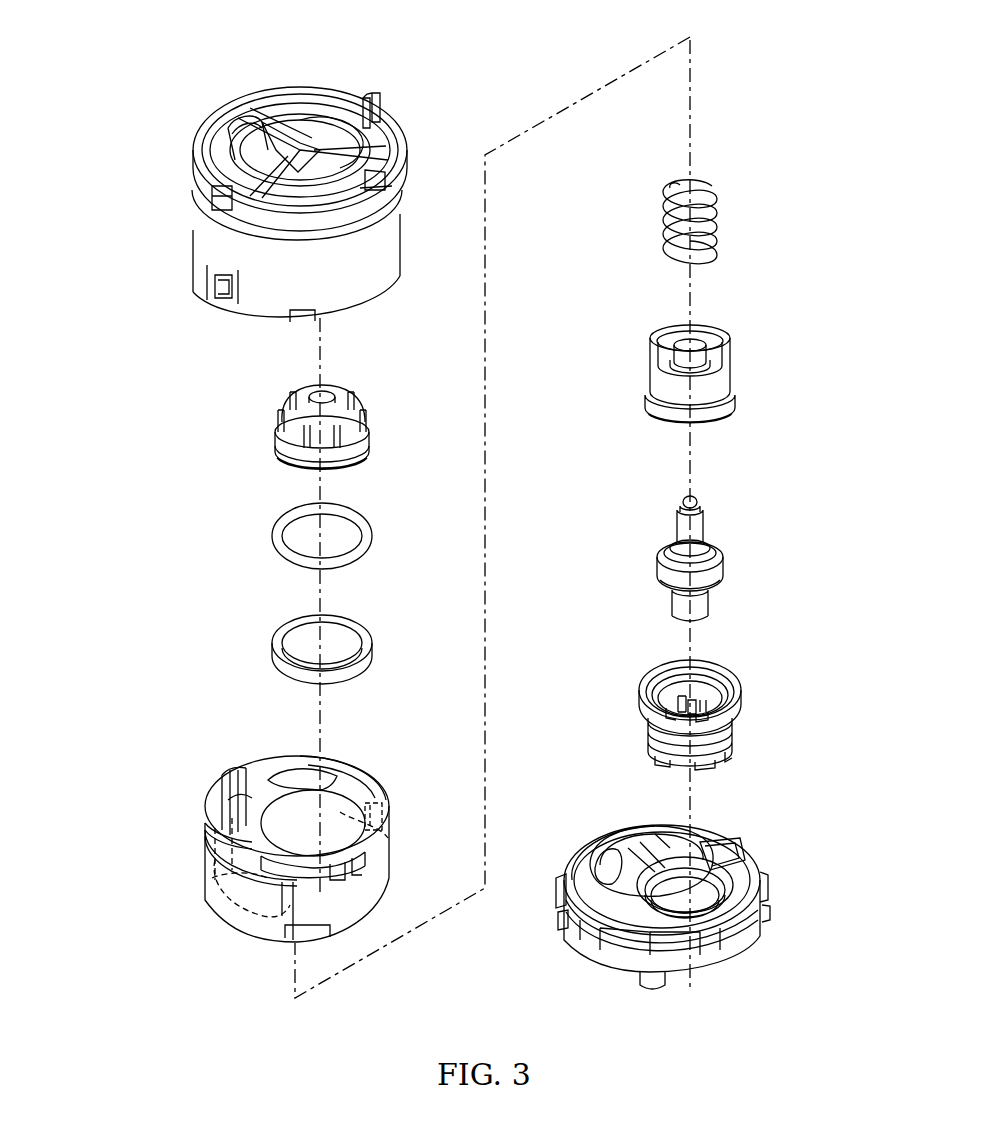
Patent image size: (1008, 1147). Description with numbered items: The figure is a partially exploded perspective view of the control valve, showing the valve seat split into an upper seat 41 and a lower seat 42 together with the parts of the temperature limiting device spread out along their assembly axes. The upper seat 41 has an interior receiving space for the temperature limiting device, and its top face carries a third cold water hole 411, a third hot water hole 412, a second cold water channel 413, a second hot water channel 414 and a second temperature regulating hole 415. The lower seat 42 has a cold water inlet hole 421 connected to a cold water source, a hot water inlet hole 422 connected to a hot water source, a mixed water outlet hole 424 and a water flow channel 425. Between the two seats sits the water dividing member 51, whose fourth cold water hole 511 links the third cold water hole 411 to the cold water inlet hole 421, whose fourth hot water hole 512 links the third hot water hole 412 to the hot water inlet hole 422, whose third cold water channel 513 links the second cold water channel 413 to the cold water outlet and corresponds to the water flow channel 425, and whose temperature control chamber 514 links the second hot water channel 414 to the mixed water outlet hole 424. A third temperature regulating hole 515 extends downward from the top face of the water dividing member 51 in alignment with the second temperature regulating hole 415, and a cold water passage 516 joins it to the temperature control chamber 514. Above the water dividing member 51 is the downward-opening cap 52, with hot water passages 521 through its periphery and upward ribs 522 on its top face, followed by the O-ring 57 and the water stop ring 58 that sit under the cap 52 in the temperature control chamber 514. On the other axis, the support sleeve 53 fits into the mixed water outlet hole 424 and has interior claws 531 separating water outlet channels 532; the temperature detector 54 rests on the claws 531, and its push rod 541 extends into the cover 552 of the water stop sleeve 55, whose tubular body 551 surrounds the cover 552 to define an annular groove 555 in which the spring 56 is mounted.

The upper seat 41 is at (276, 177).
The third cold water hole 411 is at (215, 195).
The third hot water hole 412 is at (371, 110).
The second cold water channel 413 is at (228, 130).
The second hot water channel 414 is at (370, 175).
The second temperature regulating hole 415 is at (270, 93).
The lower seat 42 is at (654, 886).
The cold water inlet hole 421 is at (580, 913).
The hot water inlet hole 422 is at (653, 845).
The mixed water outlet hole 424 is at (722, 888).
The water flow channel 425 is at (590, 850).
The water dividing member 51 is at (270, 831).
The fourth cold water hole 511 is at (226, 788).
The fourth hot water hole 512 is at (296, 780).
The third cold water channel 513 is at (203, 818).
The temperature control chamber 514 is at (318, 826).
The third temperature regulating hole 515 is at (355, 780).
The cold water passage 516 is at (360, 848).
The cap 52 is at (311, 404).
The hot water passages 521 is at (275, 438).
The ribs 522 is at (355, 448).
The support sleeve 53 is at (695, 701).
The claws 531 is at (650, 697).
The water outlet channels 532 is at (693, 697).
The temperature detector 54 is at (715, 528).
The push rod 541 is at (683, 499).
The water stop sleeve 55 is at (696, 355).
The tubular body 551 is at (655, 384).
The cover 552 is at (680, 336).
The annular groove 555 is at (714, 346).
The spring 56 is at (700, 180).
The O-ring 57 is at (282, 546).
The water stop ring 58 is at (362, 626).